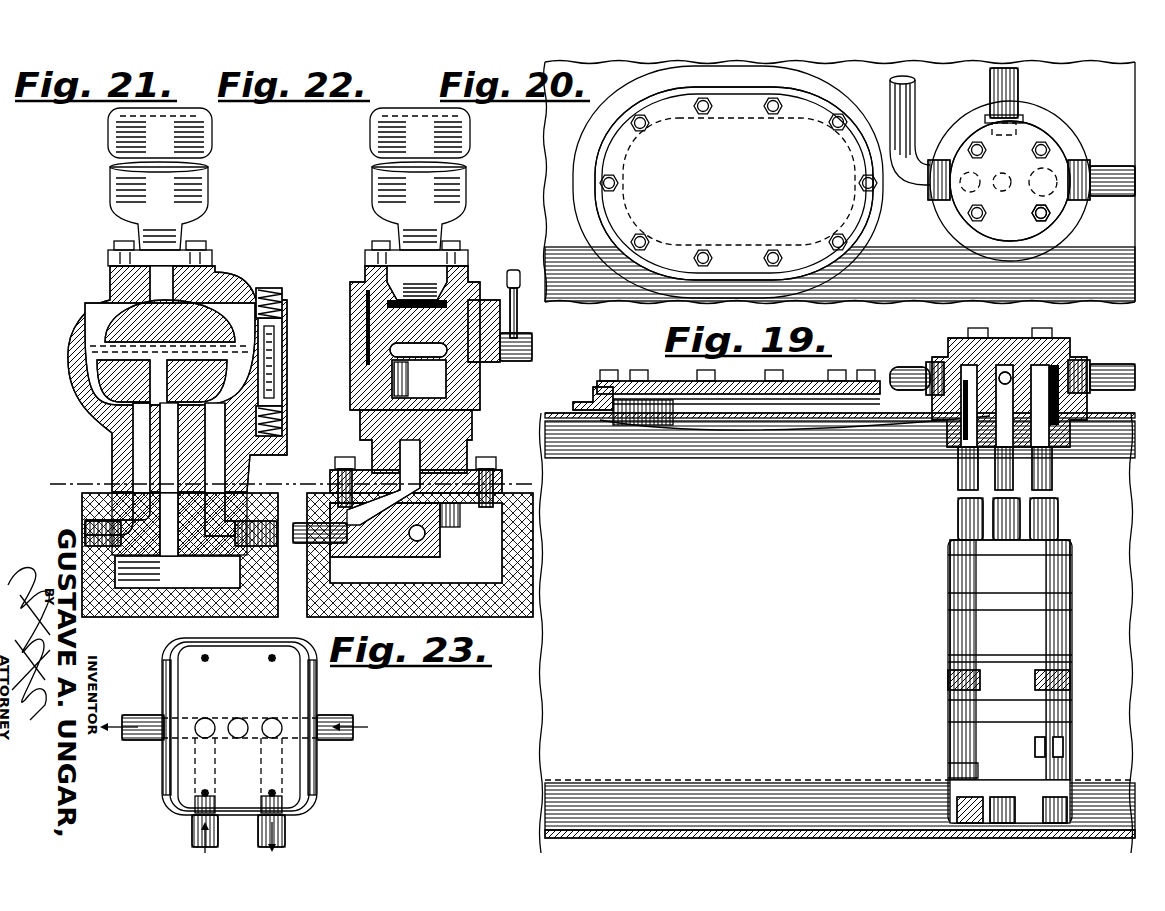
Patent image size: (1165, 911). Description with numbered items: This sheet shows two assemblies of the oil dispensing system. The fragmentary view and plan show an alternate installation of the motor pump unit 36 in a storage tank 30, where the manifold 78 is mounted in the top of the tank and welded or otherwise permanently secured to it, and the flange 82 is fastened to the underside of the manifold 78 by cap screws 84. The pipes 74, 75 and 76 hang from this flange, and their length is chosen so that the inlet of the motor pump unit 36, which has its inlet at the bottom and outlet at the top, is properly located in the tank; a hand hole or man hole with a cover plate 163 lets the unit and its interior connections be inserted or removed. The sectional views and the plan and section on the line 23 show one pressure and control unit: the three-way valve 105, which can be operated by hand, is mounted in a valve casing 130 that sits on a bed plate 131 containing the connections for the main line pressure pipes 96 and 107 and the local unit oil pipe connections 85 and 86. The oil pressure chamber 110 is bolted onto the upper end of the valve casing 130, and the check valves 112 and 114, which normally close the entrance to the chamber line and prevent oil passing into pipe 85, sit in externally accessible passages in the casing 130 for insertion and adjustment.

In FIG. 21, the pressure chamber 110 is at (110, 138).
In FIG. 22, the pressure chamber 110 is at (370, 137).
In FIG. 21, the valve casing 130 is at (68, 377).
In FIG. 22, the valve casing 130 is at (368, 272).
In FIG. 21, the three-way valve 105 is at (118, 308).
In FIG. 22, the three-way valve 105 is at (372, 322).
In FIG. 21, the check valve 112 is at (285, 306).
In FIG. 21, the check valve 114 is at (283, 407).
In FIG. 21, the bed plate 131 is at (152, 548).
In FIG. 22, the bed plate 131 is at (507, 493).
In FIG. 23, the bed plate 131 is at (290, 683).
In FIG. 21, the pipe 107 is at (85, 527).
In FIG. 23, the pipe 107 is at (143, 742).
In FIG. 21, the pipe 96 is at (268, 548).
In FIG. 23, the pipe 96 is at (338, 742).
In FIG. 21, the section line 23— 23 is at (62, 463).
In FIG. 22, the section line 23— 23 is at (285, 463).
In FIG. 20, the cover plate 163 is at (728, 182).
In FIG. 19, the cover plate 163 is at (668, 382).
In FIG. 20, the storage tank 30 is at (593, 292).
In FIG. 19, the storage tank 30 is at (548, 830).
In FIG. 20, the manifold 78 is at (1032, 137).
In FIG. 19, the manifold 78 is at (1087, 358).
In FIG. 20, the cap screws 84 is at (1048, 212).
In FIG. 19, the cap screws 84 is at (1052, 330).
In FIG. 19, the flange 82 is at (943, 440).
In FIG. 19, the pipe 74 is at (955, 473).
In FIG. 19, the pipe 75 is at (1012, 480).
In FIG. 19, the pipe 76 is at (1054, 465).
In FIG. 19, the motor pump unit 36 is at (1010, 681).
In FIG. 23, the local unit oil pipe connection 86 is at (192, 832).
In FIG. 23, the pipe 85 is at (285, 828).